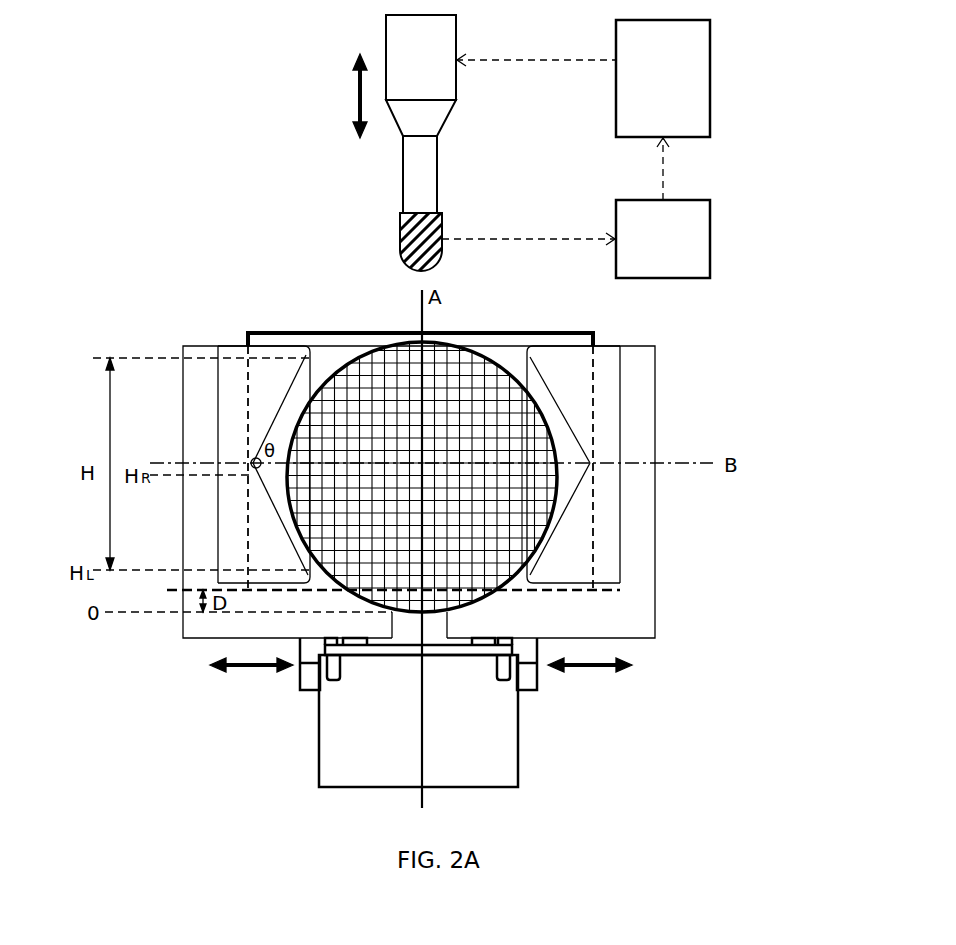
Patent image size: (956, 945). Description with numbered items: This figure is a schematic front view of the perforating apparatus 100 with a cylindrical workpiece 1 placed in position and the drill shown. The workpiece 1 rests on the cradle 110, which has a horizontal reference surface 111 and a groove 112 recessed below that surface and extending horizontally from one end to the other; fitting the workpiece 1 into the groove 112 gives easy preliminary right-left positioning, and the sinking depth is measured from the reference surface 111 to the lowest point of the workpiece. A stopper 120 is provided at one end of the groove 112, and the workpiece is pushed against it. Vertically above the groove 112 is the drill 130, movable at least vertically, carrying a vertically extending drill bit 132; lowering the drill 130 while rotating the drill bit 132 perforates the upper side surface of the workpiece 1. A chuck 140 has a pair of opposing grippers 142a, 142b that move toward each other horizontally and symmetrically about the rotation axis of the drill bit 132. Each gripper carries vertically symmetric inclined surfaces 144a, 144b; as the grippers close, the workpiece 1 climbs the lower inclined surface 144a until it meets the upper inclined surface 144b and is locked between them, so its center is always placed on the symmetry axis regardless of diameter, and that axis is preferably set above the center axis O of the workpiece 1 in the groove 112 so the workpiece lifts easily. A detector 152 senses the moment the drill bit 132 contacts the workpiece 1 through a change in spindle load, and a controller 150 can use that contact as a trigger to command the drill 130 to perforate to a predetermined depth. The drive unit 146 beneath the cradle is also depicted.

The cylindrical workpiece 1 is at (470, 348).
The perforating apparatus 100 is at (176, 328).
The cradle 110 is at (197, 640).
The reference surface 111 is at (583, 592).
The groove 112 is at (480, 597).
The stopper 120 is at (350, 333).
The drill 130 is at (374, 41).
The drill bit 132 is at (400, 232).
The chuck 140 is at (232, 328).
The gripper 142a is at (300, 346).
The gripper 142b is at (565, 346).
The lower inclined surface 144a is at (550, 532).
The upper inclined surface 144b is at (553, 398).
The rotation driver 146 is at (518, 740).
The controller 150 is at (710, 87).
The detector 152 is at (710, 240).
The center axis O is at (422, 477).